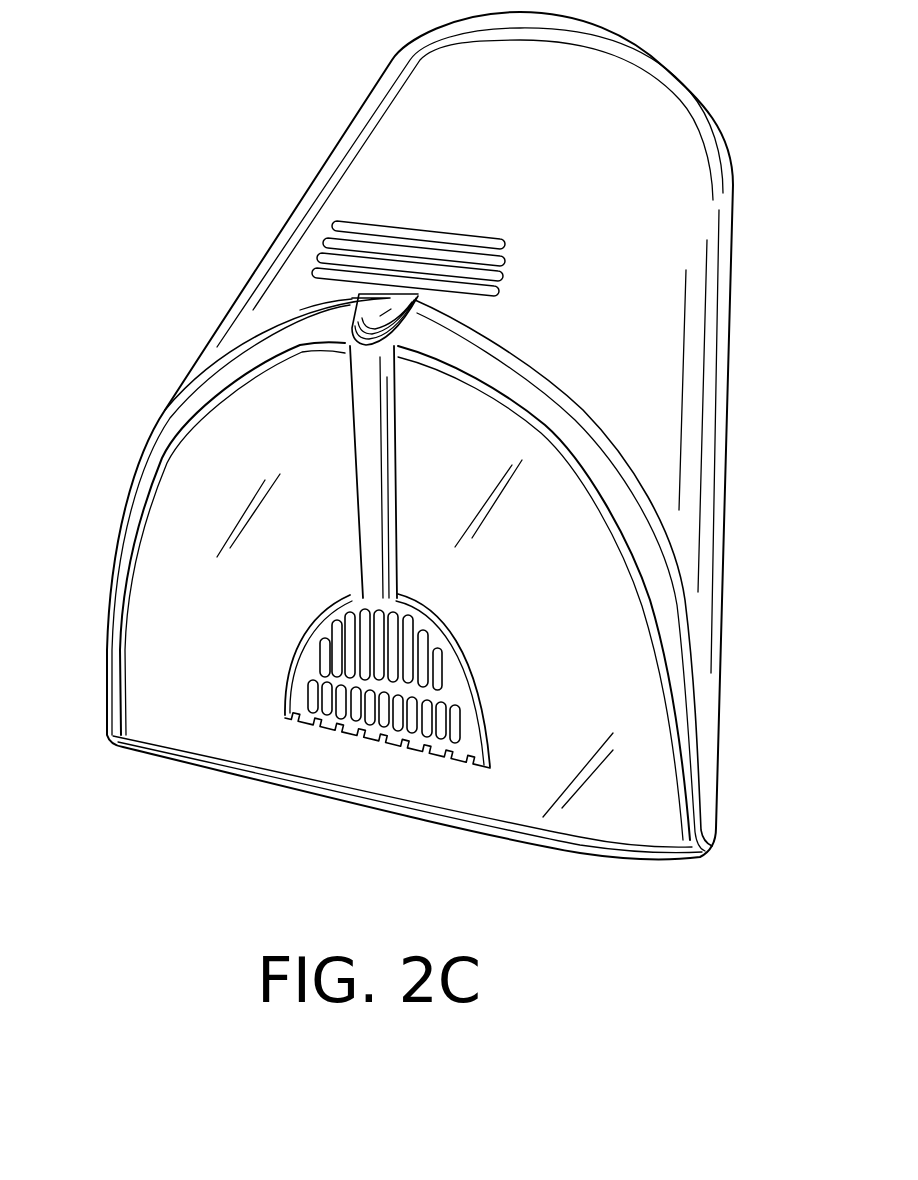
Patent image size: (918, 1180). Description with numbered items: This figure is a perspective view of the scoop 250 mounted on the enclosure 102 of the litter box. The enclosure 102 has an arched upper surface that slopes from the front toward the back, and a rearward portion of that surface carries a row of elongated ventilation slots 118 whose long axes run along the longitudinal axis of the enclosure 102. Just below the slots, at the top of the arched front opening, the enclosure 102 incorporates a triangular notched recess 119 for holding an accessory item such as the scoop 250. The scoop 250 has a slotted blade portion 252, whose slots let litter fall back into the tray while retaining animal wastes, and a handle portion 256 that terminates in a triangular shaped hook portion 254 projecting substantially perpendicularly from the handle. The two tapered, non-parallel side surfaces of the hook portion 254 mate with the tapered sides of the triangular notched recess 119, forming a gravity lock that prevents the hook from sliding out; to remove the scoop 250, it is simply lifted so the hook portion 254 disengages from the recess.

The enclosure 102 is at (419, 436).
The ventilation slots 118 is at (473, 231).
The triangular notched recess 119 is at (343, 305).
The scoop 250 is at (382, 531).
The slotted blade portion 252 is at (290, 648).
The triangular shaped hook portion 254 is at (420, 299).
The handle portion 256 is at (362, 497).